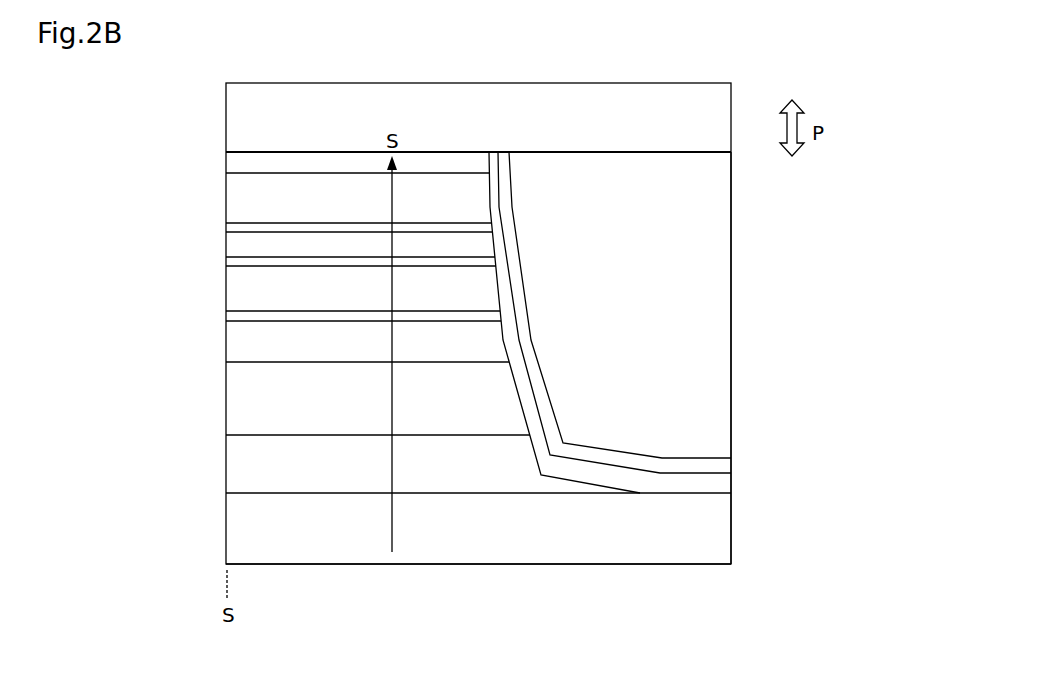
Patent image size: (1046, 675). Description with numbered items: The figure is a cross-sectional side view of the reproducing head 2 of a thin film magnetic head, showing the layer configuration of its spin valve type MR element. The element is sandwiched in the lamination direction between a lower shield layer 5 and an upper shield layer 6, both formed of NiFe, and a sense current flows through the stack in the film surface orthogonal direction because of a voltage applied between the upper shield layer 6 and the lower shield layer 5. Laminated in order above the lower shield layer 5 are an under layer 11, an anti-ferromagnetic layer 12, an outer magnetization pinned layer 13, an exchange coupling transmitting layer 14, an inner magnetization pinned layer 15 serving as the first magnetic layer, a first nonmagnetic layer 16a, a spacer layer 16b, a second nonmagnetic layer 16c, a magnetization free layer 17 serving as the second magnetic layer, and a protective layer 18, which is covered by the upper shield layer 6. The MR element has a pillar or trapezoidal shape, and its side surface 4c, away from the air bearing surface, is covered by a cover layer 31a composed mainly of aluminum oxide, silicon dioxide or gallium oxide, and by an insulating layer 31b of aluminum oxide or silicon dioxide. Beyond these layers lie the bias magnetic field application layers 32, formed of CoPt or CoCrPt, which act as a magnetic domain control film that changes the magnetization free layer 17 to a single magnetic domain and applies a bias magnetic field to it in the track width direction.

The reproducing head 2 is at (343, 68).
The lower shield layer 5 is at (226, 548).
The upper shield layer 6 is at (226, 117).
The under layer 11 is at (226, 493).
The anti-ferromagnetic layer 12 is at (226, 398).
The outer magnetization pinned layer 13 is at (226, 340).
The exchange coupling transmitting layer 14 is at (226, 313).
The inner magnetization pinned layer 15 is at (226, 296).
The first nonmagnetic layer 16a is at (226, 268).
The spacer layer 16b is at (226, 250).
The second nonmagnetic layer 16c is at (226, 227).
The magnetization free layer 17 is at (226, 200).
The protective layer 18 is at (226, 170).
The side surface 4c is at (488, 209).
The cover layer 31a is at (727, 487).
The insulating layer 31b is at (727, 464).
The bias magnetic field application layers 32 is at (723, 326).